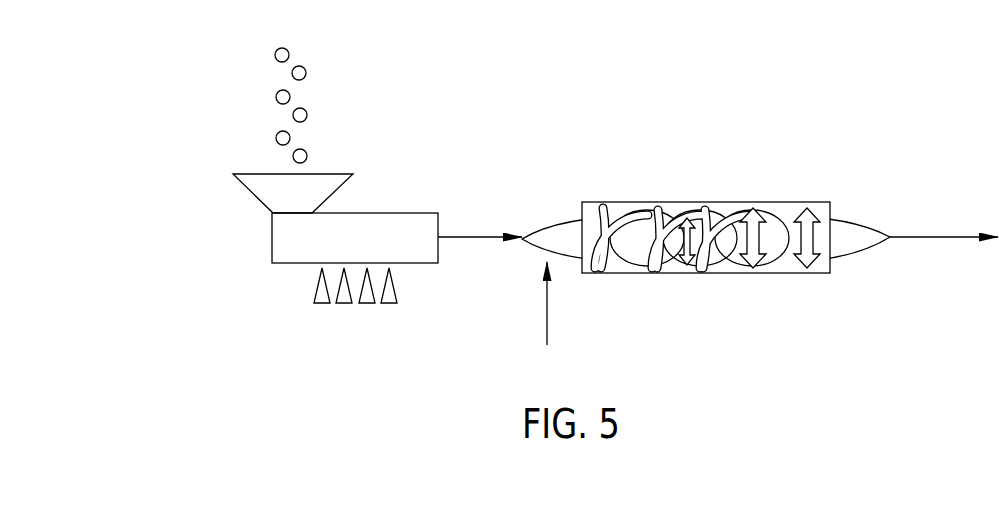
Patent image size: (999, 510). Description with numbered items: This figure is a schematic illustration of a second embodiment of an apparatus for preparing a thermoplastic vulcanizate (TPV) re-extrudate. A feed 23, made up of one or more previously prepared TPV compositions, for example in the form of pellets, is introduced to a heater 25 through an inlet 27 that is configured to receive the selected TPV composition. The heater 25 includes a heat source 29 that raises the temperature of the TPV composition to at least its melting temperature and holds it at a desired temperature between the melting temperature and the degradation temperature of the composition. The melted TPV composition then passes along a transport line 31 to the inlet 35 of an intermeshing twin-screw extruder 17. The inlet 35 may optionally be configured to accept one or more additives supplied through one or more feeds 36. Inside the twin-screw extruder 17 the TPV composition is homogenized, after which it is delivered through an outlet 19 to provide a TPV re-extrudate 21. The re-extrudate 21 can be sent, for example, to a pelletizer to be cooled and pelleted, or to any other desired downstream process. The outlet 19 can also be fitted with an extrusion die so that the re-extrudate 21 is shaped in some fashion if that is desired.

The intermeshing twin-screw extruder 17 is at (730, 166).
The outlet 19 is at (863, 217).
The TPV re-extrudate 21 is at (938, 240).
The feed 23 is at (266, 111).
The heater 25 is at (270, 240).
The inlet 27 is at (247, 187).
The heat source 29 is at (390, 305).
The transport line 31 is at (475, 236).
The inlet 35 is at (560, 217).
The feeds 36 is at (548, 307).